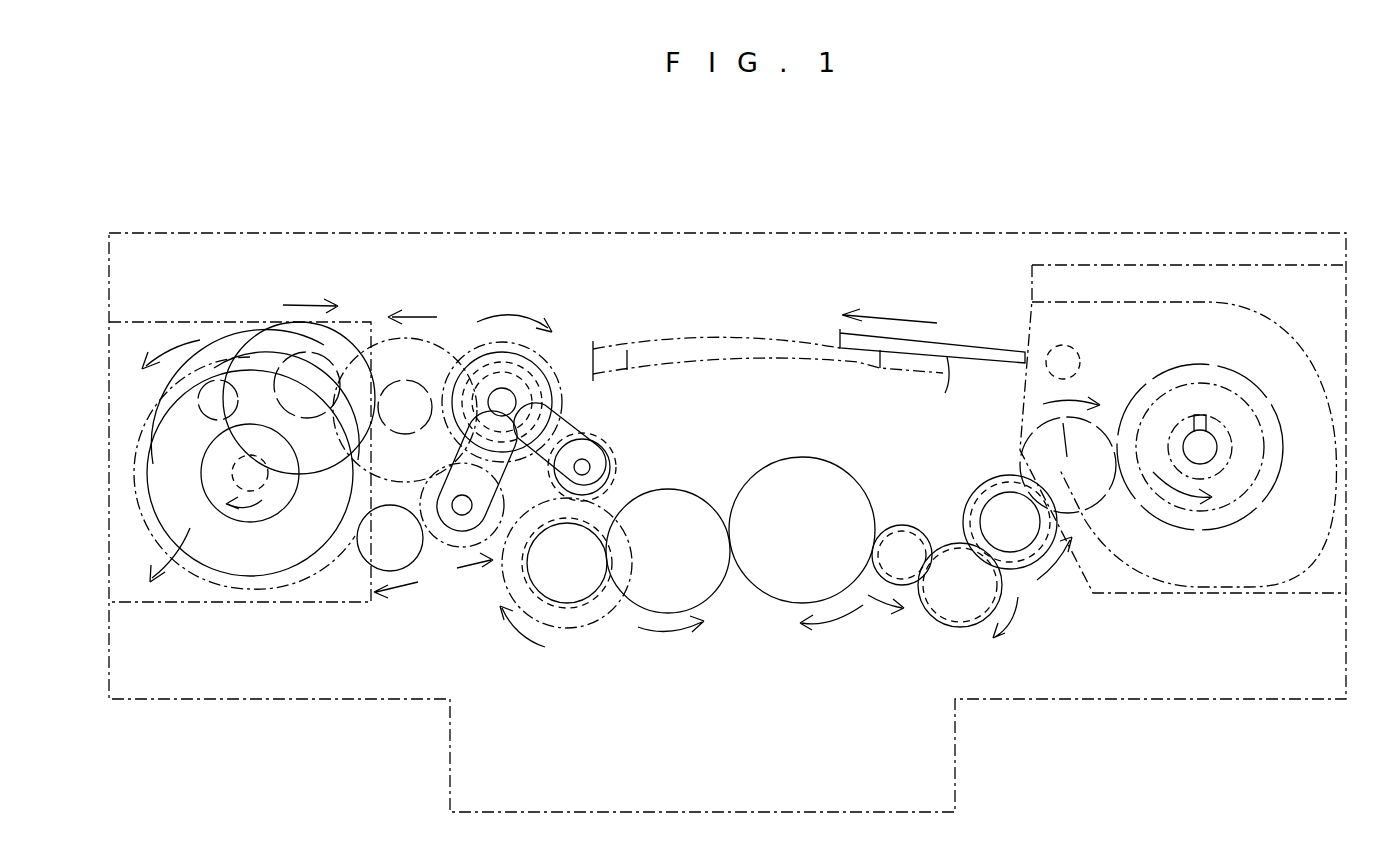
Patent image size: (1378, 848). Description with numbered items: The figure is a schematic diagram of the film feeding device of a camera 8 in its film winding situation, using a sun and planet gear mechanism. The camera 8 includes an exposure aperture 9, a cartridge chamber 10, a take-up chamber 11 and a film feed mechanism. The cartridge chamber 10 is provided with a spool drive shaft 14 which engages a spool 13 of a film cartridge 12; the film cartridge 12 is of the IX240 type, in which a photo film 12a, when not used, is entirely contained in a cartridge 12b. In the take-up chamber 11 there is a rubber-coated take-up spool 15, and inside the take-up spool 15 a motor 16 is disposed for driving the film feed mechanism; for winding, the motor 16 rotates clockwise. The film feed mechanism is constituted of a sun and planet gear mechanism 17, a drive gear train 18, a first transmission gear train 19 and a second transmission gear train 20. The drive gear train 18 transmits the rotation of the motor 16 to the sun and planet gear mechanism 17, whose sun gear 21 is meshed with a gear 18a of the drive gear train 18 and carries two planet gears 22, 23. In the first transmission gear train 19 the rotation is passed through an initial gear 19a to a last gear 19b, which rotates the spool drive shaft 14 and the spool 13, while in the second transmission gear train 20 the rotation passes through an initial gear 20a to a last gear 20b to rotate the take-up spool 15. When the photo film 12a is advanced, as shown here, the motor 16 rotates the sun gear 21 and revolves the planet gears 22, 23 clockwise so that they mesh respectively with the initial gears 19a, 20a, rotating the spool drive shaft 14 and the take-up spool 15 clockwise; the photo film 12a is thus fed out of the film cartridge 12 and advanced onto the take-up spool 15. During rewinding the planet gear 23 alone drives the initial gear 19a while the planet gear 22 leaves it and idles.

The camera 8 is at (778, 222).
The exposure aperture 9 is at (880, 352).
The cartridge chamber 10 is at (1138, 266).
The take-up chamber 11 is at (218, 322).
The film cartridge 12 is at (1082, 270).
The photo film 12a is at (980, 350).
The cartridge 12b is at (1205, 327).
The spool 13 is at (1253, 387).
The spool drive shaft 14 is at (1235, 455).
The take-up spool 15 is at (176, 585).
The motor 16 is at (258, 478).
The sun and planet gear mechanism 17 is at (572, 325).
The drive gear train 18 is at (362, 308).
The gear 18a is at (440, 378).
The first transmission gear train 19 is at (738, 640).
The initial gear 19a is at (572, 605).
The last gear 19b is at (1217, 543).
The second transmission gear train 20 is at (345, 590).
The initial gear 20a is at (412, 566).
The last gear 20b is at (240, 562).
The sun gear 21 is at (572, 408).
The planet gear 22 is at (608, 444).
The planet gear 23 is at (453, 547).